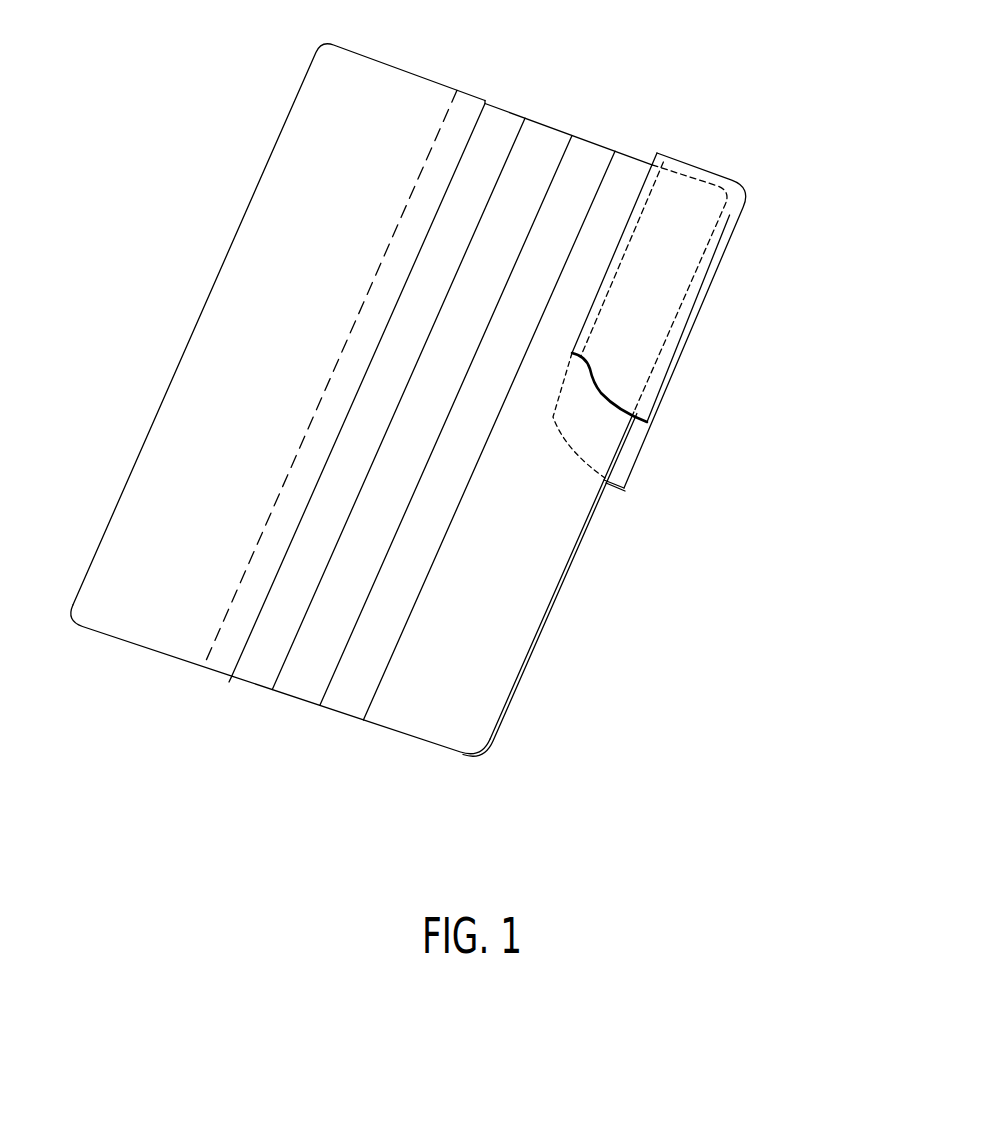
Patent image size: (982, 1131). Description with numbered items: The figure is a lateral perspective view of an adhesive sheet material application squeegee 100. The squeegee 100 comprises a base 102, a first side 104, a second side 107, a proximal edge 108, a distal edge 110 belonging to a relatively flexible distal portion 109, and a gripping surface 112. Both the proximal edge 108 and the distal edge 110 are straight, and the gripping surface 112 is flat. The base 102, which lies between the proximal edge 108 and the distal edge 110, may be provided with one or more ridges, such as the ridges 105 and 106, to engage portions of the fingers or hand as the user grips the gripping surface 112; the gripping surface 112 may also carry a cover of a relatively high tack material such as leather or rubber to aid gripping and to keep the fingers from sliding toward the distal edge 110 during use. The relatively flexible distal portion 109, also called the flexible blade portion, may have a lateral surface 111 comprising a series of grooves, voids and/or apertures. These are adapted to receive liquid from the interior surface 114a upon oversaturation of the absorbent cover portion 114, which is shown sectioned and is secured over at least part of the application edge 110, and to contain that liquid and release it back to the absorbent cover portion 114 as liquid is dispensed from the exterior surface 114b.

The adhesive sheet material application squeegee 100 is at (641, 86).
The base 102 is at (362, 730).
The first side 104 is at (497, 76).
The ridge 105 is at (488, 147).
The ridge 106 is at (592, 157).
The second side 107 is at (200, 701).
The proximal edge 108 is at (234, 208).
The relatively flexible distal portion 109 is at (472, 768).
The distal edge 110 is at (555, 598).
The lateral surface 111 is at (515, 572).
The gripping surface 112 is at (278, 349).
The absorbent cover portion 114 is at (731, 200).
The interior surface 114a is at (628, 450).
The exterior surface 114b is at (669, 300).